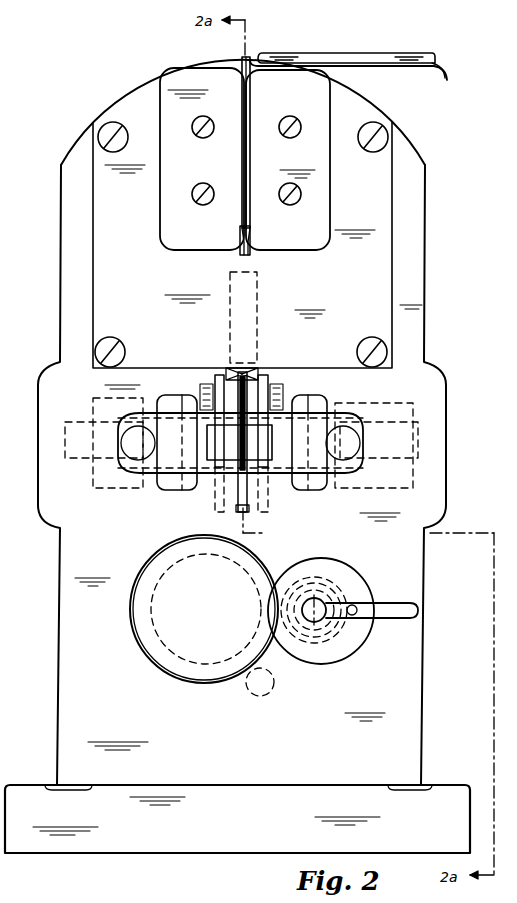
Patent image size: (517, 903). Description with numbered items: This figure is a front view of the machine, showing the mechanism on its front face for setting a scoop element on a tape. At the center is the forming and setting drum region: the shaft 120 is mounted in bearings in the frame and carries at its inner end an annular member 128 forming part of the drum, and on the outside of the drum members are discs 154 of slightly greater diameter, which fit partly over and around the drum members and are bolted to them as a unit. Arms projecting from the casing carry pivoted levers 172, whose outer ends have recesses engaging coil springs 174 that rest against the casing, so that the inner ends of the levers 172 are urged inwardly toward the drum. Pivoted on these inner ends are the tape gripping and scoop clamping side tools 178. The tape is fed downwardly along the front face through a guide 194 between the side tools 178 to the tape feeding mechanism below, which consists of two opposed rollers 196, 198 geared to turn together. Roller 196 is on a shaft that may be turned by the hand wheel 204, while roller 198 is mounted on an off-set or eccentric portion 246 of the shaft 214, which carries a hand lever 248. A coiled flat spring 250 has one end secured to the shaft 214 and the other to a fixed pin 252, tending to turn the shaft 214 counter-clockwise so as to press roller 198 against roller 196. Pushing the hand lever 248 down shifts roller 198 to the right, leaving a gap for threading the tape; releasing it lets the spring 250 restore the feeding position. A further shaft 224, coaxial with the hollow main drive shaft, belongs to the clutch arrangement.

The shaft 120 is at (77, 452).
The annular member 128 is at (227, 388).
The discs 154 is at (268, 377).
The levers 172 is at (315, 430).
The coil springs 174 is at (143, 477).
The side tools 178 is at (260, 445).
The guide 194 is at (249, 160).
The roller 196 is at (212, 642).
The roller 198 is at (337, 652).
The hand wheel 204 is at (180, 672).
The shaft 214 is at (309, 652).
The shaft 224 is at (263, 690).
The off-set or eccentric portion 246 is at (318, 598).
The hand lever 248 is at (422, 610).
The coiled flat spring 250 is at (345, 632).
The fixed pin 252 is at (356, 606).